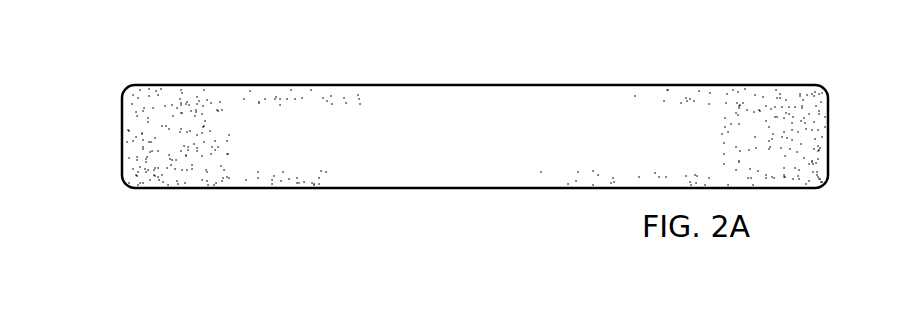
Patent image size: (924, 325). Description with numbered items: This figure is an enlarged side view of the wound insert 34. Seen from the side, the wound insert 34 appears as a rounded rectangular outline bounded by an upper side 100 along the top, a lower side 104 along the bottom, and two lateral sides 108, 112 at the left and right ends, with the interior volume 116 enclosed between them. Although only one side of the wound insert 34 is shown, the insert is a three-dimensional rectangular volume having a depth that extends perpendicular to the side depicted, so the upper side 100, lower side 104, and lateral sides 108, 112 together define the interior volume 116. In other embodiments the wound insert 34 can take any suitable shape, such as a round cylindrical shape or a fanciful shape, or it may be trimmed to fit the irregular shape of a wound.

The wound insert 34 is at (236, 66).
The upper side 100 is at (475, 85).
The lower side 104 is at (475, 188).
The lateral side 108 is at (122, 137).
The lateral side 112 is at (828, 138).
The interior volume 116 is at (494, 149).